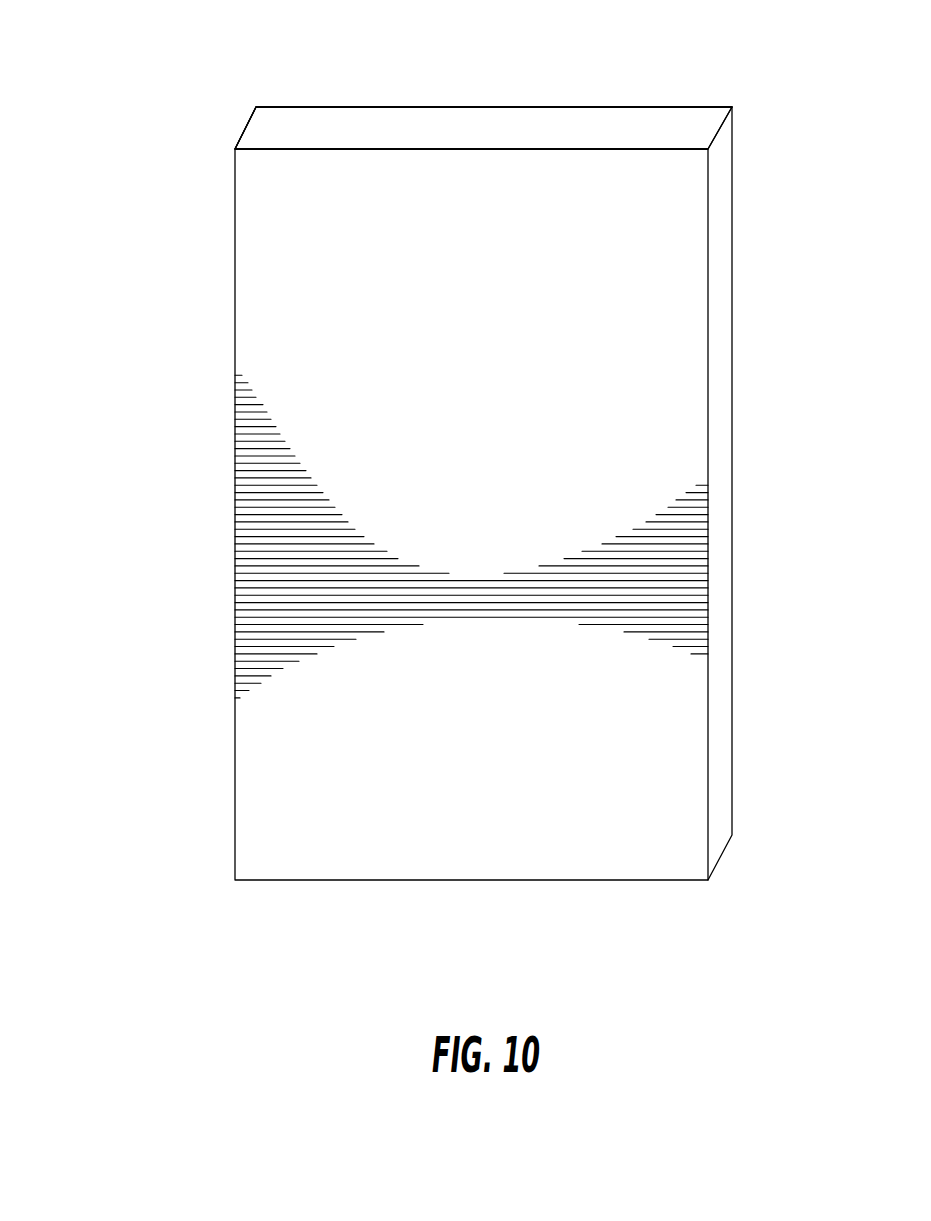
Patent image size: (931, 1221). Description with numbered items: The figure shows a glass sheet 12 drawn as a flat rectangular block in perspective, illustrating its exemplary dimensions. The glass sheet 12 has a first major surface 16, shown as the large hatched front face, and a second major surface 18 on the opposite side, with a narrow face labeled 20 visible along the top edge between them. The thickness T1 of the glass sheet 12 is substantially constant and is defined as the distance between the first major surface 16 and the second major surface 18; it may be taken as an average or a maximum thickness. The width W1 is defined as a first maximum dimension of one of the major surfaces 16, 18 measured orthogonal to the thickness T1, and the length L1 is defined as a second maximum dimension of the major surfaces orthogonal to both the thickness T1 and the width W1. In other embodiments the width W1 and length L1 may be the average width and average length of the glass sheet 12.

The glass sheet 12 is at (153, 332).
The first major surface 16 is at (497, 465).
The second major surface 18 is at (479, 103).
The top face of plate 20 is at (618, 130).
The thickness T1 is at (248, 98).
The length L1 is at (822, 880).
The width W1 is at (708, 898).